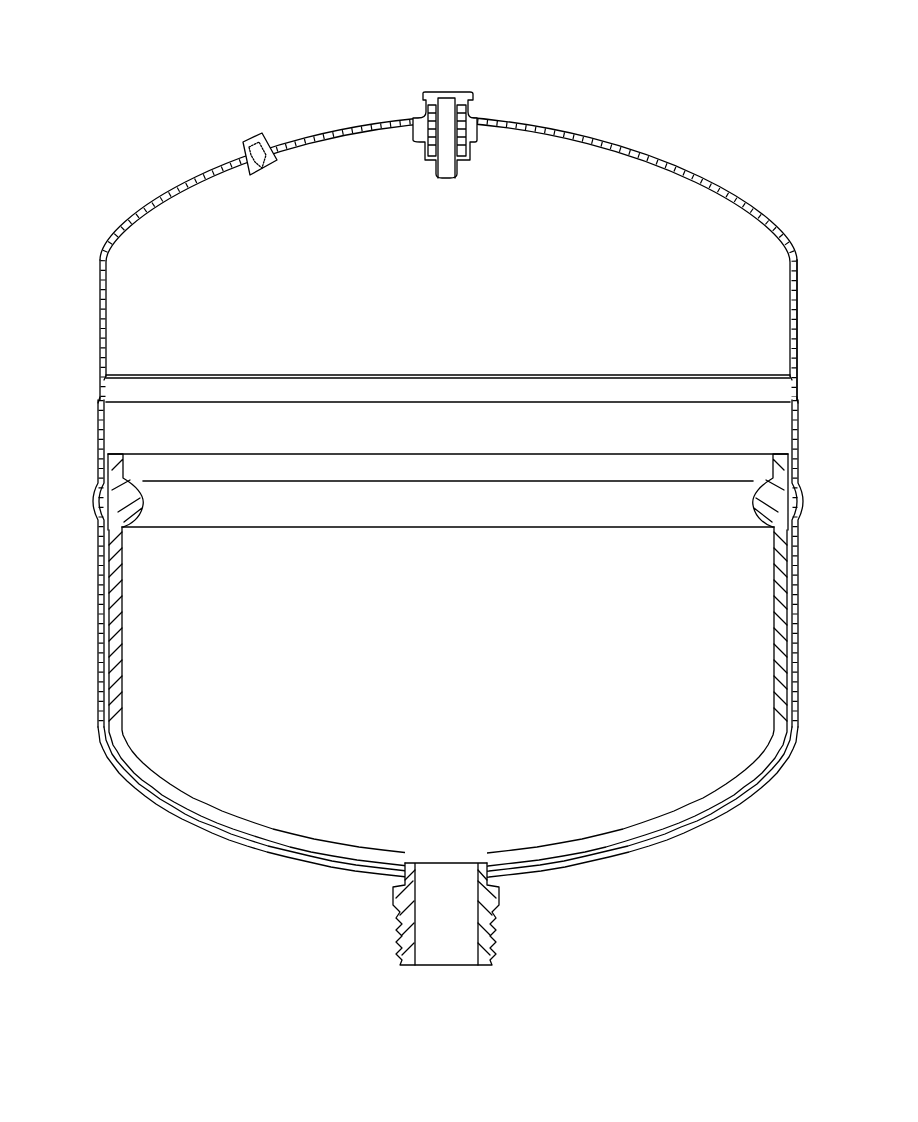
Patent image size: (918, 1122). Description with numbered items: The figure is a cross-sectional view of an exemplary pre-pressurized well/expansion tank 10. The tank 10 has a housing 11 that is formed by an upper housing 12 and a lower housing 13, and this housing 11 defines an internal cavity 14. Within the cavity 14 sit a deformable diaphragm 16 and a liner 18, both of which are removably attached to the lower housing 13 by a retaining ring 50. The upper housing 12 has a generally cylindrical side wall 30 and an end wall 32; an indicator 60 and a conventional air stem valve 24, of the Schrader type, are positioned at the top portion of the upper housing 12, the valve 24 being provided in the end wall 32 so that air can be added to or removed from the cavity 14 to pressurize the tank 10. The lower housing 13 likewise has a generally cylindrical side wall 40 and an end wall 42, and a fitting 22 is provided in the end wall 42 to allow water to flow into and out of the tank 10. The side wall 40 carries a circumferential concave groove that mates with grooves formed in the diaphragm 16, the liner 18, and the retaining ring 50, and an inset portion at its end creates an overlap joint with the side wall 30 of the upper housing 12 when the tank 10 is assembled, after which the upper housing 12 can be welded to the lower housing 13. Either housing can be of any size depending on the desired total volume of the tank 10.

The pre-pressurized well/expansion tank 10 is at (723, 76).
The housing 11 is at (52, 275).
The upper housing 12 is at (99, 341).
The lower housing 13 is at (99, 555).
The internal cavity 14 is at (656, 226).
The deformable diaphragm 16 is at (352, 840).
The liner 18 is at (97, 661).
The fitting 22 is at (500, 914).
The air stem valve 24 is at (258, 138).
The side wall 30 is at (797, 292).
The end wall 32 is at (510, 114).
The side wall 40 is at (797, 596).
The end wall 42 is at (528, 879).
The retaining ring 50 is at (479, 493).
The indicator 60 is at (437, 80).